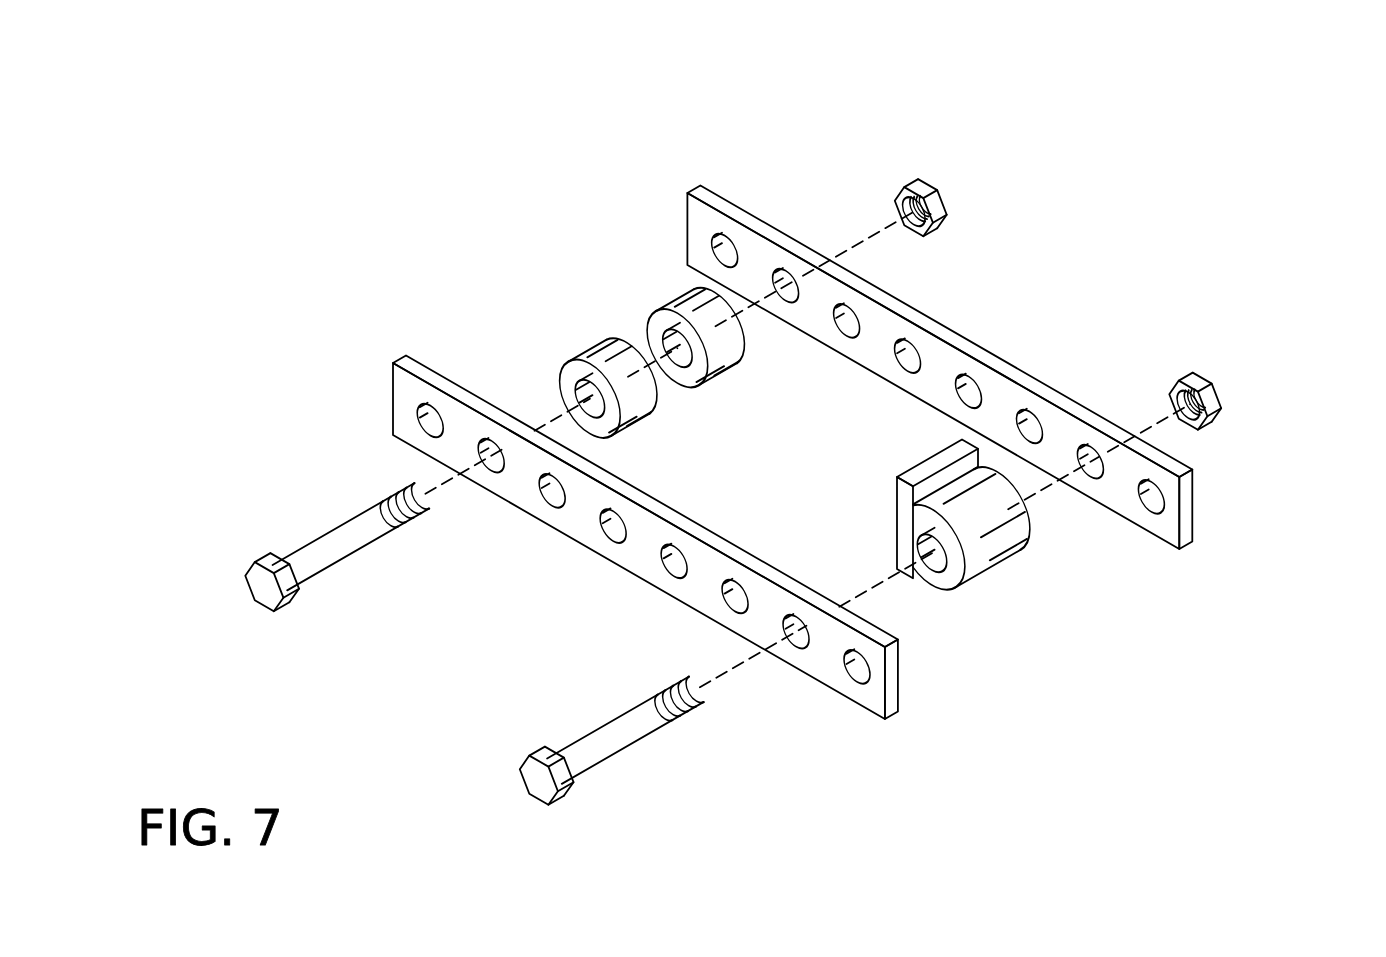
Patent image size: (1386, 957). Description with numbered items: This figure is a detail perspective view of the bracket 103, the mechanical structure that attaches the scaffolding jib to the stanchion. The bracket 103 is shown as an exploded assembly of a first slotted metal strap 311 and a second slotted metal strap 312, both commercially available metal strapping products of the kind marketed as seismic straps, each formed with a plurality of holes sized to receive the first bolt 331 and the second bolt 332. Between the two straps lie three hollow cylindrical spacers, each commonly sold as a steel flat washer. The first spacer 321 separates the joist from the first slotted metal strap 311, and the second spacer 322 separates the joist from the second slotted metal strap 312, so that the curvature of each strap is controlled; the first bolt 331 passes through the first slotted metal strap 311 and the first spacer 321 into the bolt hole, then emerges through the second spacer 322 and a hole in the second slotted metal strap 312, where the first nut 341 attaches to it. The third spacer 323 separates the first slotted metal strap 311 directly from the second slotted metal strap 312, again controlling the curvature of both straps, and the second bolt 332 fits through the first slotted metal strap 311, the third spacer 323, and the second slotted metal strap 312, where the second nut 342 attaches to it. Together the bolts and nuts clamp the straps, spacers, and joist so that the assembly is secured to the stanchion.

The bracket 103 is at (385, 143).
The first slotted metal strap 311 is at (815, 667).
The second slotted metal strap 312 is at (1193, 505).
The first spacer 321 is at (588, 347).
The second spacer 322 is at (680, 292).
The third spacer 323 is at (986, 545).
The first bolt 331 is at (320, 537).
The second bolt 332 is at (537, 798).
The first nut 341 is at (915, 183).
The second nut 342 is at (1201, 378).